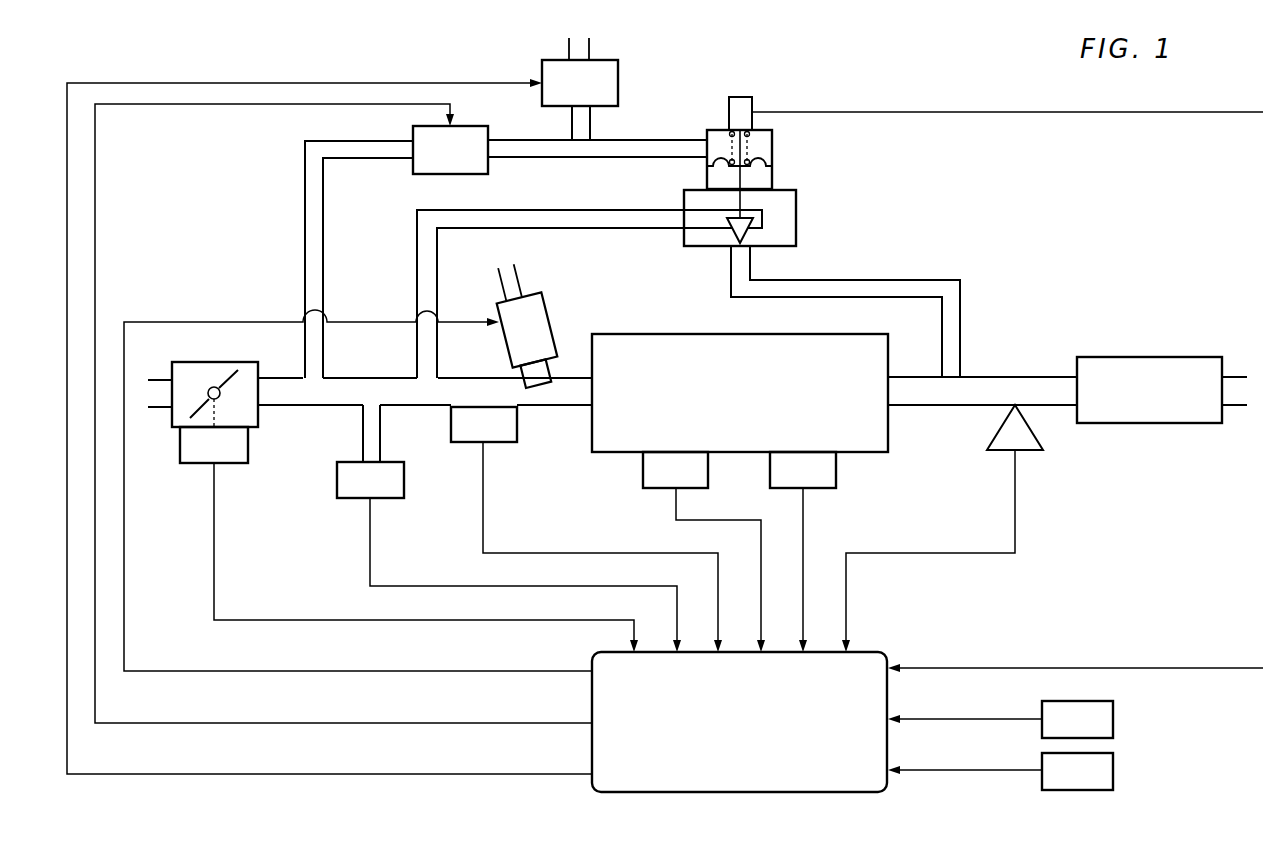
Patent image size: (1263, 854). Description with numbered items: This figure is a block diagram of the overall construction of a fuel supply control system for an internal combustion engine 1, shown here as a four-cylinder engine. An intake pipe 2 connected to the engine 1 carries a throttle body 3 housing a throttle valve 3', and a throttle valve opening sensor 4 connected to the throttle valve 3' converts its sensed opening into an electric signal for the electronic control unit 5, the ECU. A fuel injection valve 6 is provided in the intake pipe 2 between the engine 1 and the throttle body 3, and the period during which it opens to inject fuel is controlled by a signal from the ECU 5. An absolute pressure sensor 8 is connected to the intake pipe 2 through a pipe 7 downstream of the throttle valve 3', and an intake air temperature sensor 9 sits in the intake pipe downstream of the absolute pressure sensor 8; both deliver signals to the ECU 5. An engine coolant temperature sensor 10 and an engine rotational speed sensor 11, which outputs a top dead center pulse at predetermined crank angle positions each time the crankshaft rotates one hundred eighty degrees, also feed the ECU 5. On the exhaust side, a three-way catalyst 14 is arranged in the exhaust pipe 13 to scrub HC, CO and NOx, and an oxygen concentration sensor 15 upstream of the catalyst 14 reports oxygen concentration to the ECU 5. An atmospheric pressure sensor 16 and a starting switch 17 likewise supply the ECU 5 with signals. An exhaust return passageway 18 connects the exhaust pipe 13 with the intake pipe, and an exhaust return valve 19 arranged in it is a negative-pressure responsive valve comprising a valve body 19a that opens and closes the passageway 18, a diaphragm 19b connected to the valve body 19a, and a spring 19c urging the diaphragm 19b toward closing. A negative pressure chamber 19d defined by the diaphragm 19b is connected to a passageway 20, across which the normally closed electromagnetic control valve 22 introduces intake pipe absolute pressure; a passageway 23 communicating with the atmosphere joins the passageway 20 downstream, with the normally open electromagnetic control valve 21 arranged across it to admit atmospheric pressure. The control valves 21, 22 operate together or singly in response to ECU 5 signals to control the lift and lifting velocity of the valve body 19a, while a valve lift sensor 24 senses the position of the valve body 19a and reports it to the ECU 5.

The internal combustion engine 1 is at (876, 334).
The intake pipe 2 is at (544, 407).
The throttle body 3 is at (215, 378).
The throttle valve 3' is at (219, 378).
The throttle valve opening sensor 4 is at (248, 455).
The electronic control unit 5 is at (866, 650).
The fuel injection valve 6 is at (545, 303).
The pipe 7 is at (380, 433).
The absolute pressure sensor 8 is at (404, 483).
The intake air temperature sensor 9 is at (500, 442).
The engine coolant temperature sensor 10 is at (708, 470).
The engine rotational speed sensor 11 is at (836, 470).
The exhaust pipe 13 is at (1000, 377).
The three-way catalyst 14 is at (1150, 357).
The oxygen concentration sensor 15 is at (1030, 435).
The atmospheric pressure sensor 16 is at (1113, 723).
The starting switch 17 is at (1113, 772).
The exhaust return passageway 18 is at (570, 210).
The exhaust return valve 19 is at (800, 192).
The valve body 19a is at (762, 218).
The diaphragm 19b is at (707, 165).
The spring 19c is at (772, 140).
The negative pressure chamber 19d is at (716, 138).
The passageway 20 is at (323, 207).
The electromagnetic control valve 21 is at (618, 84).
The electromagnetic control valve 22 is at (488, 133).
The passageway 23 is at (590, 126).
The valve lift sensor 24 is at (750, 96).